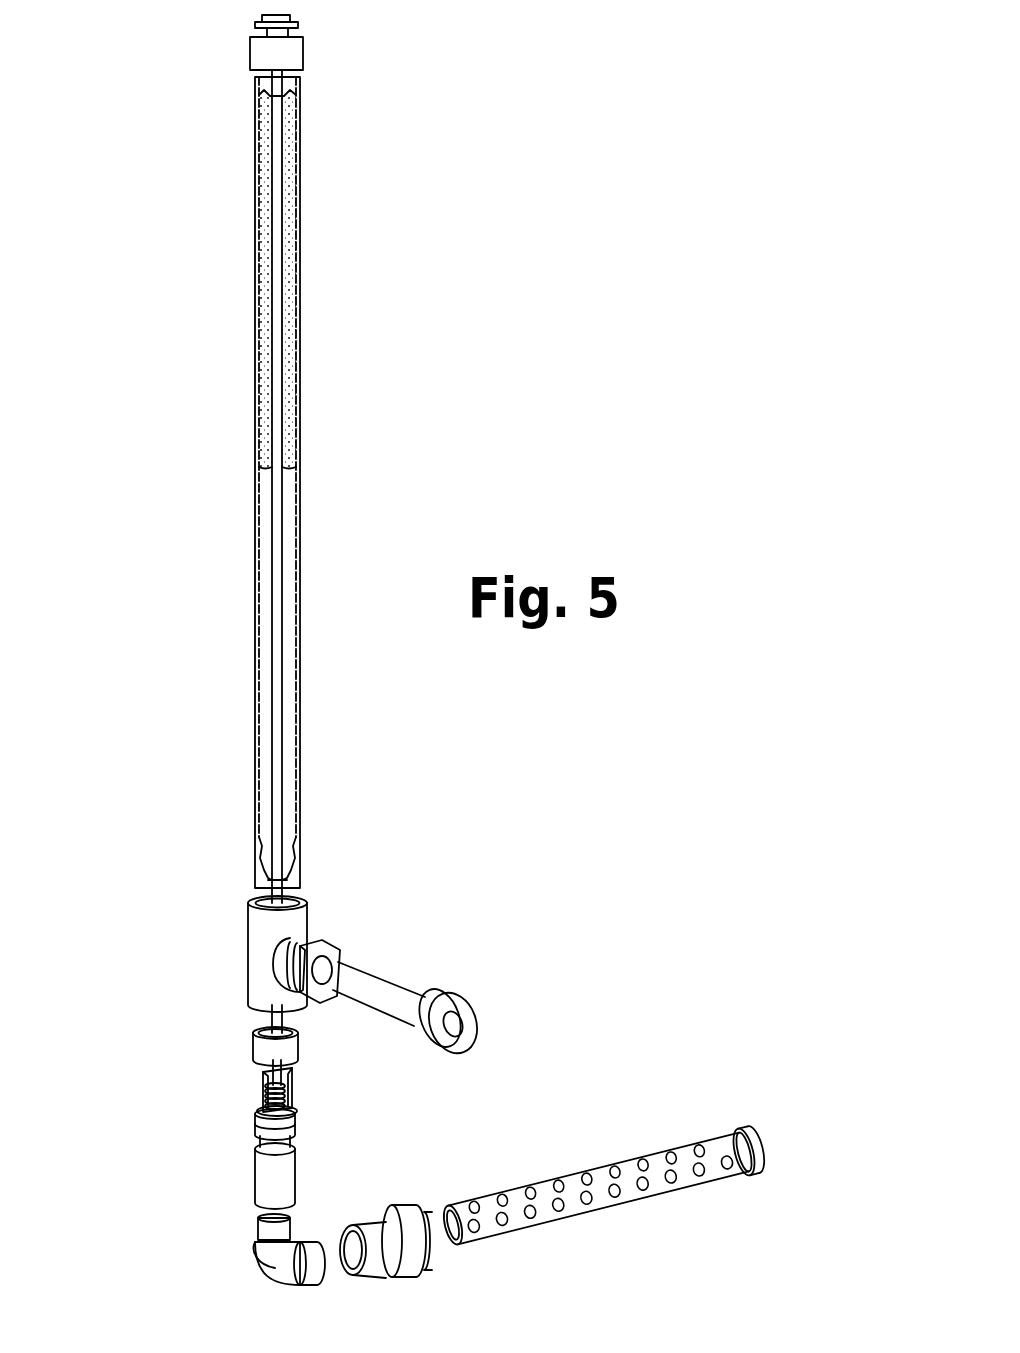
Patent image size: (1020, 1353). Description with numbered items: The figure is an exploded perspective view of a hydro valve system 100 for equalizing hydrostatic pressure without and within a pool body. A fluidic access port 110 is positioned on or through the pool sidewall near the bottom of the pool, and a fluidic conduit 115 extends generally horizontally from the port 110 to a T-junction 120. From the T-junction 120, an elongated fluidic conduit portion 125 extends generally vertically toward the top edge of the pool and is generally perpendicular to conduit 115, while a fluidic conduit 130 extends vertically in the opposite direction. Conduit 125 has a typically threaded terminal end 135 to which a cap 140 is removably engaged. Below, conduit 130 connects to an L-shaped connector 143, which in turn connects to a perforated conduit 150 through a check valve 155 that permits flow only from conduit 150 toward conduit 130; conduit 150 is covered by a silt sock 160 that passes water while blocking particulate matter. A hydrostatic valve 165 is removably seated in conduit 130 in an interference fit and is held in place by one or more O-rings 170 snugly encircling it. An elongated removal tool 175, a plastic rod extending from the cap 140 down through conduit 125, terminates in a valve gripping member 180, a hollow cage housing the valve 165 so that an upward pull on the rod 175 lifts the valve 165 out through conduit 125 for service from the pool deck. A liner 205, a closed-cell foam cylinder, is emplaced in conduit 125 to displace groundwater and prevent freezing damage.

The hydro valve system 100 is at (170, 712).
The fluidic access port 110 is at (478, 1010).
The fluidic conduit 115 is at (395, 982).
The T-junction 120 is at (250, 930).
The elongated fluidic conduit portion 125 is at (300, 570).
The fluidic conduit 130 is at (297, 1175).
The terminal end 135 is at (300, 100).
The cap 140 is at (303, 50).
The elbow 143 is at (255, 1270).
The conduit 150 is at (505, 1237).
The check valve 155 is at (412, 1265).
The silt sock 160 is at (655, 1194).
The hydrostatic valve 165 is at (258, 1092).
The O-ring 170 is at (258, 1130).
The elongated removal tool 175 is at (282, 540).
The valve gripping member 180 is at (292, 1090).
The liner 205 is at (287, 290).